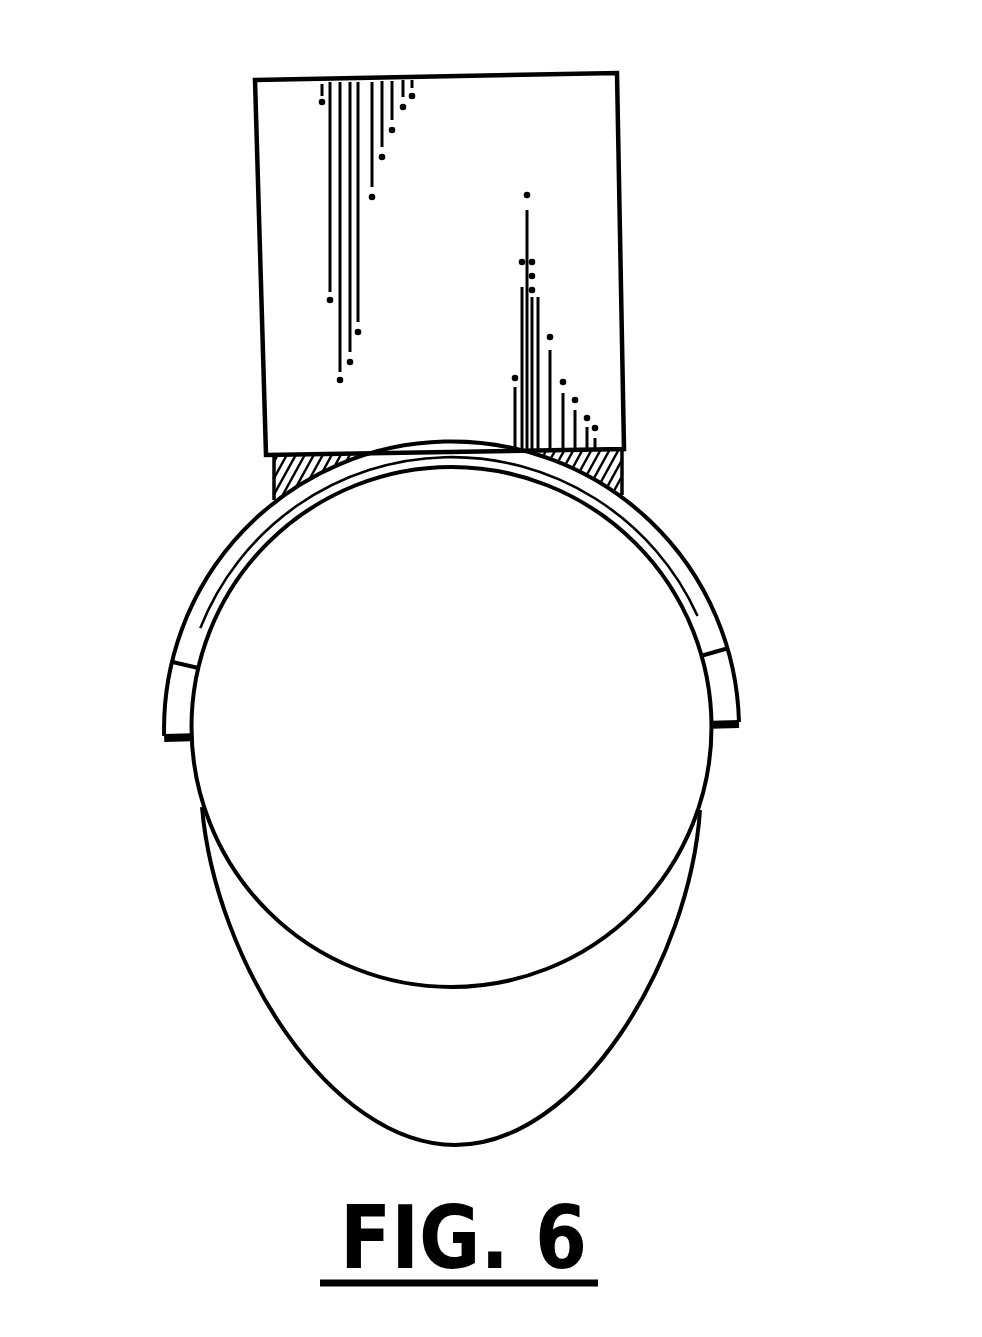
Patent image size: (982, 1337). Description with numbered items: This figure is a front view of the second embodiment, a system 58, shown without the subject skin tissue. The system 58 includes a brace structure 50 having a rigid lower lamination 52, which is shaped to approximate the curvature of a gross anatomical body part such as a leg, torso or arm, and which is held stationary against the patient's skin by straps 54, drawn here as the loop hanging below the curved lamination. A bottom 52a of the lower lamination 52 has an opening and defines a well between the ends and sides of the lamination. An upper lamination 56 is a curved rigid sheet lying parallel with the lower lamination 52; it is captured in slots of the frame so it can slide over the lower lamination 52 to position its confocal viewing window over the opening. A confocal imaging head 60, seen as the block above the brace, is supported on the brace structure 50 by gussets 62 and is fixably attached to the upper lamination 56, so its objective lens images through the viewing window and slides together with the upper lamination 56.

The brace structure 50 is at (709, 748).
The lower lamination 52 is at (166, 700).
The bottom 52a is at (646, 553).
The straps 54 is at (500, 1094).
The upper lamination 56 is at (228, 577).
The system 58 is at (470, 47).
The confocal imaging head 60 is at (624, 240).
The gussets 62 is at (273, 479).